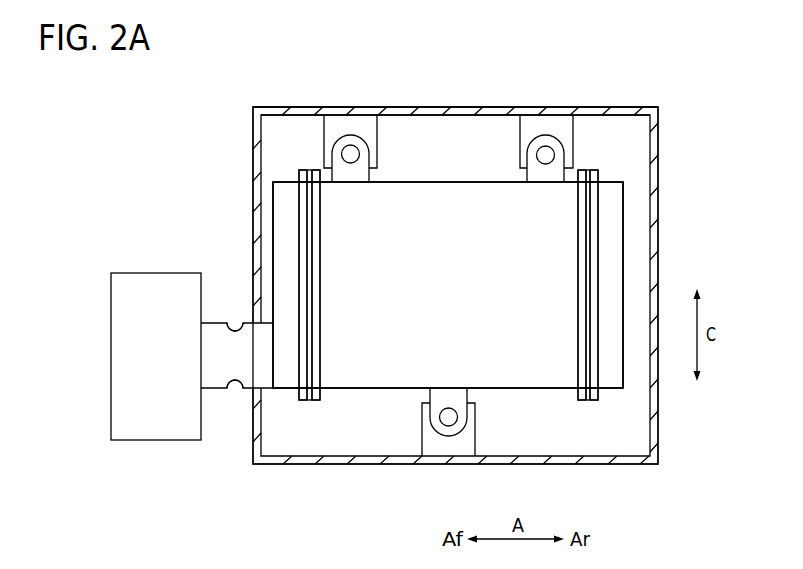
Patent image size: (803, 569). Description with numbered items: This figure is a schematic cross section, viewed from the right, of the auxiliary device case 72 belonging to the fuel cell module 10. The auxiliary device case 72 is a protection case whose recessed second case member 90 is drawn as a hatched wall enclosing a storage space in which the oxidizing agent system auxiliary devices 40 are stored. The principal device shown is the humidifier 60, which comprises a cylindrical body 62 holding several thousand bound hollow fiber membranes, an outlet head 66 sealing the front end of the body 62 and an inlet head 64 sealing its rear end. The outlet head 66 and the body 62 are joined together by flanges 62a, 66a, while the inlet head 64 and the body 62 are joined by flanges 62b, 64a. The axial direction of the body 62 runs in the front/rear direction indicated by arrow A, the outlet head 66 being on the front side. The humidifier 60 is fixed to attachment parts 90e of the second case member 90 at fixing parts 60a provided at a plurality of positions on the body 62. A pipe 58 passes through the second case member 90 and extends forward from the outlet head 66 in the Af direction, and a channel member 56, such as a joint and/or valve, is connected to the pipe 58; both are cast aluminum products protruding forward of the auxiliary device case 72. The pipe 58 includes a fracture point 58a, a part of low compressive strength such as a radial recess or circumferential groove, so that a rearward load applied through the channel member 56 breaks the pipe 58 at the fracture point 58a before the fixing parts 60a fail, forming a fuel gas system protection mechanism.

The imaging device 10 is at (133, 128).
The oxidizing agent system auxiliary devices 40 is at (630, 265).
The channel member 56 is at (145, 285).
The pipe 58 is at (222, 357).
The fracture point 58a is at (235, 331).
The humidifier 60 is at (448, 178).
The fixing parts 60a is at (362, 158).
The body 62 is at (398, 365).
The flange 62a is at (315, 402).
The flange 62b is at (580, 400).
The inlet head 64 is at (608, 213).
The flange 64a is at (597, 400).
The outlet head 66 is at (290, 203).
The flange 66a is at (302, 402).
The auxiliary device case 72 is at (618, 105).
The second case member 90 is at (659, 158).
The attachment parts 90e is at (342, 130).